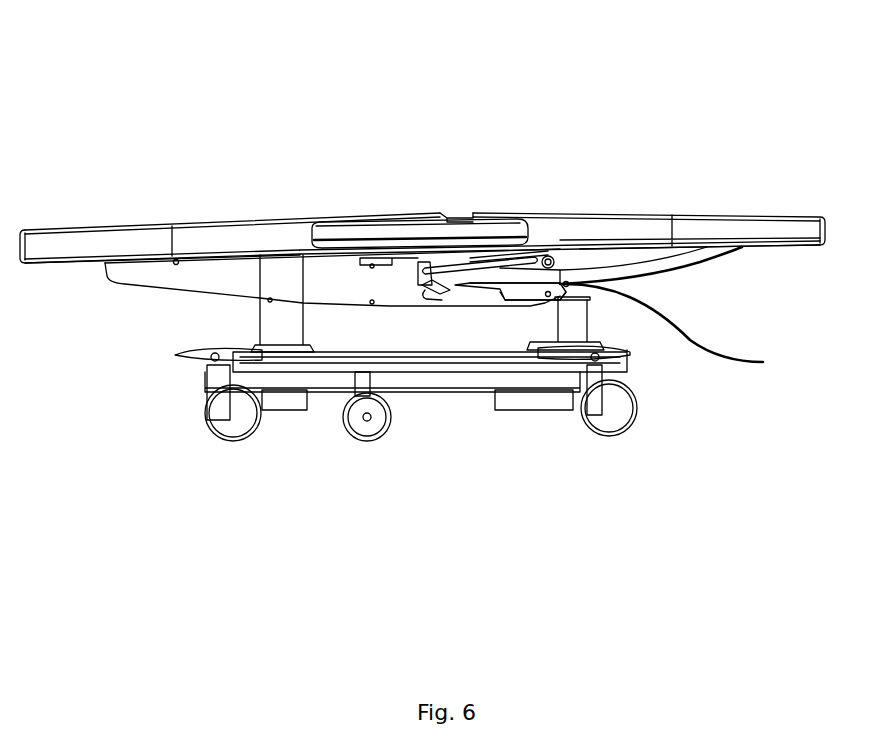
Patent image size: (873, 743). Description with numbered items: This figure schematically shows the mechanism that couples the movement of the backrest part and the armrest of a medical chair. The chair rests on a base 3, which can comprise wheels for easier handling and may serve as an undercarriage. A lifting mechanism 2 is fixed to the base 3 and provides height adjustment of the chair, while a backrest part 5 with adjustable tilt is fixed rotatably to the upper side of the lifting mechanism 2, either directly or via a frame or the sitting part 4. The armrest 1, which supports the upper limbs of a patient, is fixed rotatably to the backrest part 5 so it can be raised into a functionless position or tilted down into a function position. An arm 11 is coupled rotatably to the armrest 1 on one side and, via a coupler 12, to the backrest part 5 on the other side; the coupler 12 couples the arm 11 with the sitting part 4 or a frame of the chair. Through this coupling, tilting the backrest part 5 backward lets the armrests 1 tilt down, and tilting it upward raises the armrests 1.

The armrest 1 is at (442, 217).
The lifting mechanism 2 is at (273, 315).
The base 3 is at (323, 377).
The sitting part 4 is at (248, 217).
The backrest part 5 is at (625, 217).
The arm 11 is at (691, 333).
The coupler 12 is at (548, 288).